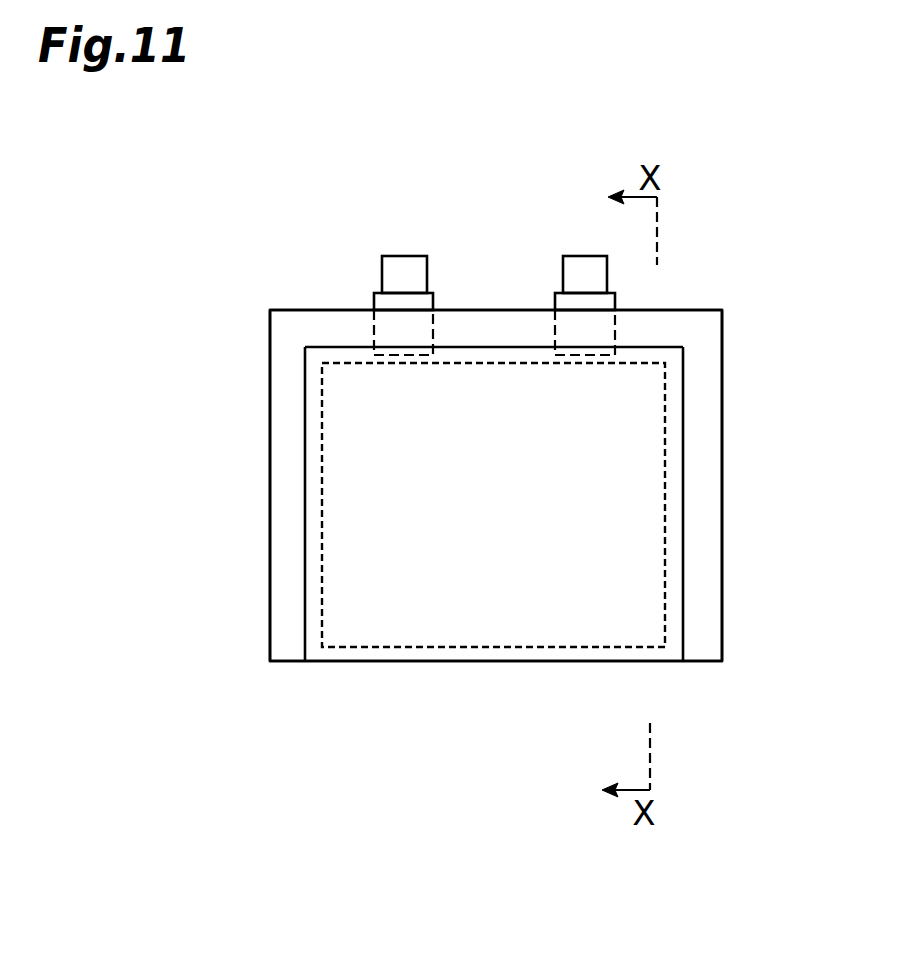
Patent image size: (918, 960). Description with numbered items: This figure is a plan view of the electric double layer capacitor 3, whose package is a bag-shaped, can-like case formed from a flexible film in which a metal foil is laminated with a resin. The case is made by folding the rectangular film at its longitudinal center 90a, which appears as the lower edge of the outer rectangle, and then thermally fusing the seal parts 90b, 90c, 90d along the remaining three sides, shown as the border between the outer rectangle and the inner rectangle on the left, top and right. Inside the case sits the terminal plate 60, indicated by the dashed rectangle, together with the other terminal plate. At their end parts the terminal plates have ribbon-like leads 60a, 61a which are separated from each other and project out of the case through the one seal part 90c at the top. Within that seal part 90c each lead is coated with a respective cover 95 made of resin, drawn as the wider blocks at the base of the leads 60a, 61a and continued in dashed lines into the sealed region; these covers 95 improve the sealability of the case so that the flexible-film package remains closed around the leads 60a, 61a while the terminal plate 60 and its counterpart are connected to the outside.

The electric double layer capacitor 3 is at (731, 147).
The terminal plate 60 is at (322, 462).
The lead 60a is at (402, 256).
The lead 61a is at (583, 256).
The cover 95 is at (374, 297).
The longitudinal center 90a is at (430, 662).
The seal part 90b is at (285, 526).
The seal part 90c is at (488, 333).
The seal part 90d is at (722, 462).